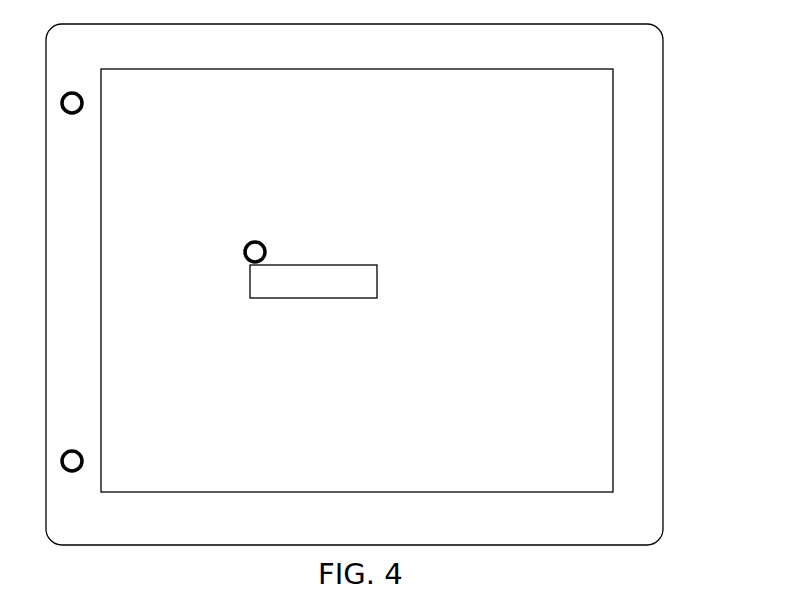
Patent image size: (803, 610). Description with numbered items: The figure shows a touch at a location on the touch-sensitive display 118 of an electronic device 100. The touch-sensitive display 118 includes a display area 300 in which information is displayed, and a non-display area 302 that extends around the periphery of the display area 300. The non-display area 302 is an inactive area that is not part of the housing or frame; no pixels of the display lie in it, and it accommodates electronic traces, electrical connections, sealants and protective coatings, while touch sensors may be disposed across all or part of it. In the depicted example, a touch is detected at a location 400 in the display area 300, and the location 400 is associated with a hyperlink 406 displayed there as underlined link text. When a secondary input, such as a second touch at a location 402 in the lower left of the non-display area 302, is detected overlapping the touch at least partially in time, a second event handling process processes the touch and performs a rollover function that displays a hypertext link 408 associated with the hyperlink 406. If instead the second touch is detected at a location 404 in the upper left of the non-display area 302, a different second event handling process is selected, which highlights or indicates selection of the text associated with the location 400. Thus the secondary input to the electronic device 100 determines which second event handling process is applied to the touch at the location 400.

The electronic device 100 is at (389, 284).
The touch-sensitive display 118 is at (664, 194).
The display area 300 is at (428, 102).
The non-display area 302 is at (638, 334).
The location 400 is at (250, 244).
The location 402 is at (74, 450).
The location 404 is at (74, 91).
The hyperlink 406 is at (280, 249).
The hypertext link 408 is at (314, 299).